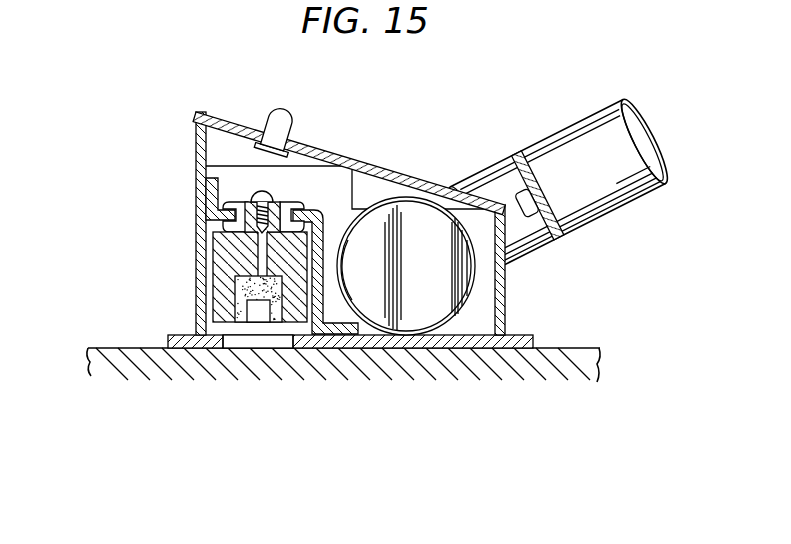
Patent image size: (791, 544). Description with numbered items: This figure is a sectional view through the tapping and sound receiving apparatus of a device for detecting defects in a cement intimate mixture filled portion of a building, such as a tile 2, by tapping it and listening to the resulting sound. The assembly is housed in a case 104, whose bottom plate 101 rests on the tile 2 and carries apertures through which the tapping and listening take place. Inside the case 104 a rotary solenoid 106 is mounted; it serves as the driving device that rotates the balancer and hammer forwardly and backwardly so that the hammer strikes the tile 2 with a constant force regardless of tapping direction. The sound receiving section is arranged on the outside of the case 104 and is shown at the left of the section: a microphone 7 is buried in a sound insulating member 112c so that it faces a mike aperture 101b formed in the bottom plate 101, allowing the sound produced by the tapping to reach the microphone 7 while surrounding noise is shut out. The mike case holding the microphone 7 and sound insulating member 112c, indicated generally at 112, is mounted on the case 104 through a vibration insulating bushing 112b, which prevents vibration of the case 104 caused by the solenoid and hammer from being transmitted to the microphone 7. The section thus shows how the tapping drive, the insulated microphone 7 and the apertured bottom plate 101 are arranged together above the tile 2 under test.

The tile 2 is at (568, 353).
The microphone 7 is at (258, 313).
The bottom plate 101 is at (398, 338).
The mike aperture 101b is at (285, 337).
The case 104 is at (188, 165).
The rotary solenoid 106 is at (463, 275).
The mounting block 112 is at (221, 315).
The vibration insulating bushing 112b is at (210, 218).
The sound insulating member 112c is at (277, 315).